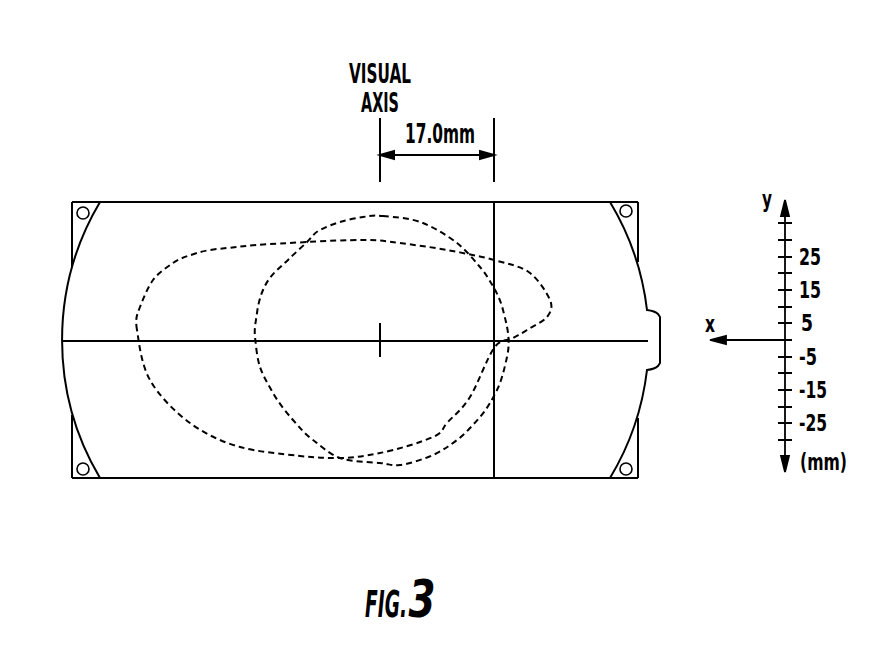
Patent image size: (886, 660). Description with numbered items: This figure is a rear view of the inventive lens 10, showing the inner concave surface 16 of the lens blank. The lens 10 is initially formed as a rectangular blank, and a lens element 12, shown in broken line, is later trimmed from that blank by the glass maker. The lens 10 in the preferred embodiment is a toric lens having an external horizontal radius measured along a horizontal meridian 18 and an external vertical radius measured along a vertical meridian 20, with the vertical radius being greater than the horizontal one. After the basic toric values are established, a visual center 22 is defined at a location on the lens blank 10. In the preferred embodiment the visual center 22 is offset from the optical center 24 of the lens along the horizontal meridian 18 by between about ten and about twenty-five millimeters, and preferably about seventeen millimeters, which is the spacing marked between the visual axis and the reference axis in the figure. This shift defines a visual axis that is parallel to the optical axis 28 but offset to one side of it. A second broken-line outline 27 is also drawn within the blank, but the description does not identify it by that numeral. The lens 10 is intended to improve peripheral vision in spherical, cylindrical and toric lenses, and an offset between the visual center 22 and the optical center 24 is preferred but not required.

The lens 10 is at (138, 201).
The lens element 12 is at (247, 248).
The inner concave surface 16 is at (110, 263).
The horizontal meridian 18 is at (93, 343).
The vertical meridian 20 is at (494, 227).
The visual center 22 is at (380, 342).
The optical center 24 is at (494, 342).
The pupil zone 27 is at (332, 225).
The optical axis 28 is at (494, 148).